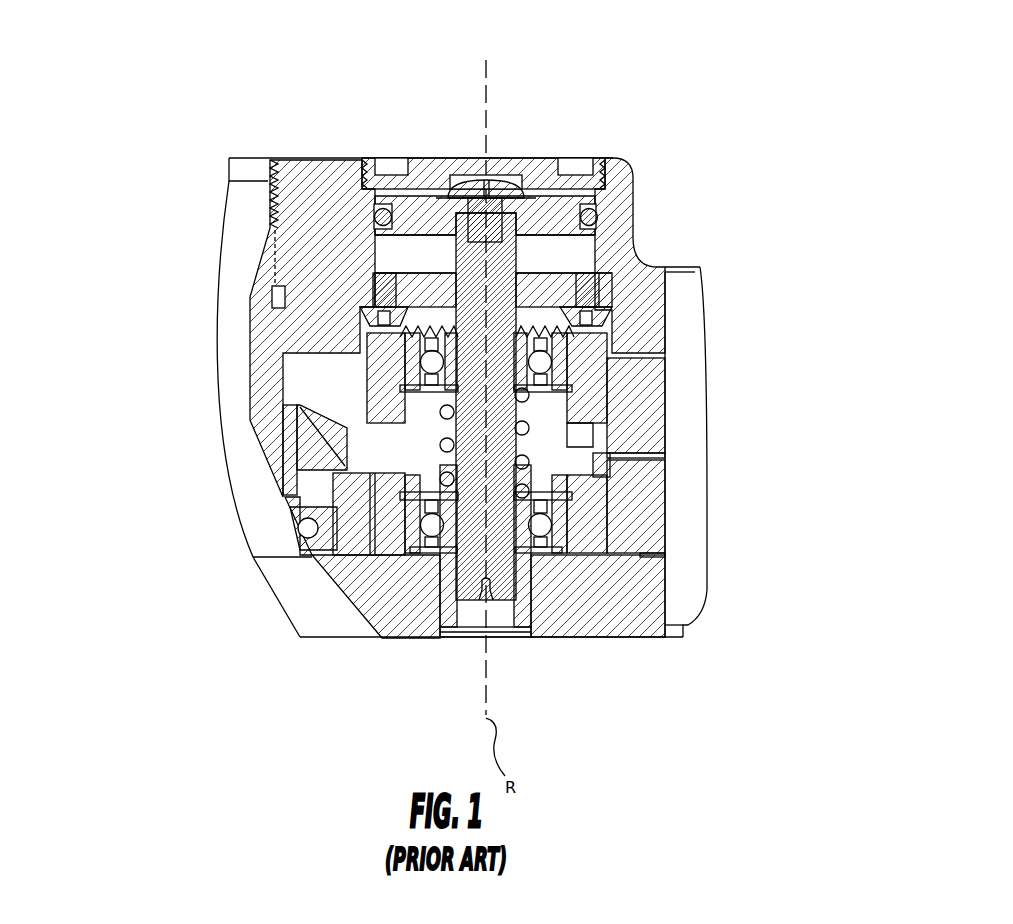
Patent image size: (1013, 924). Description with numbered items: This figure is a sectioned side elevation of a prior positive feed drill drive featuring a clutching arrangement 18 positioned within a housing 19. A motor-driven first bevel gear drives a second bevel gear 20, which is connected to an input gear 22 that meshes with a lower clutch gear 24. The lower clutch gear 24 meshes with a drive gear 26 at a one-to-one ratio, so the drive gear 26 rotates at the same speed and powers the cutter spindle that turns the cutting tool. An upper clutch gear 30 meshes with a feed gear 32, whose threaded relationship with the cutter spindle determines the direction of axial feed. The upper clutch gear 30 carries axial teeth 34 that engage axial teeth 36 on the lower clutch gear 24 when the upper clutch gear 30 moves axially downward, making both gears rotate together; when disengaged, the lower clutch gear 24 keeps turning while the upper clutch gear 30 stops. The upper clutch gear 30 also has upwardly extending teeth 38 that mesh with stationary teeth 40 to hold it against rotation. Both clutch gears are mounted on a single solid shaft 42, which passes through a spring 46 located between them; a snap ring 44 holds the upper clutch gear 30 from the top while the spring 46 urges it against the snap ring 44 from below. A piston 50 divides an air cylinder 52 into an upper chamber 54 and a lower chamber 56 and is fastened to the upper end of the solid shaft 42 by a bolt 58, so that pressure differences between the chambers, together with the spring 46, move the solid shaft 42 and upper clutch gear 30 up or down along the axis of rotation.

The clutching arrangement 18 is at (320, 390).
The housing 19 is at (233, 207).
The second bevel gear 20 is at (308, 436).
The input gear 22 is at (345, 498).
The lower clutch gear 24 is at (590, 530).
The drive gear 26 is at (650, 520).
The upper clutch gear 30 is at (673, 400).
The feed gear 32 is at (700, 412).
The axial teeth 34 is at (665, 410).
The axial teeth 36 is at (640, 470).
The upwardly extending teeth 38 is at (605, 352).
The stationary teeth 40 is at (552, 303).
The solid shaft 42 is at (490, 597).
The snap ring 44 is at (455, 330).
The spring 46 is at (450, 443).
The piston 50 is at (545, 194).
The air cylinder 52 is at (547, 258).
The upper chamber 54 is at (443, 252).
The lower chamber 56 is at (398, 257).
The bolt 58 is at (449, 250).